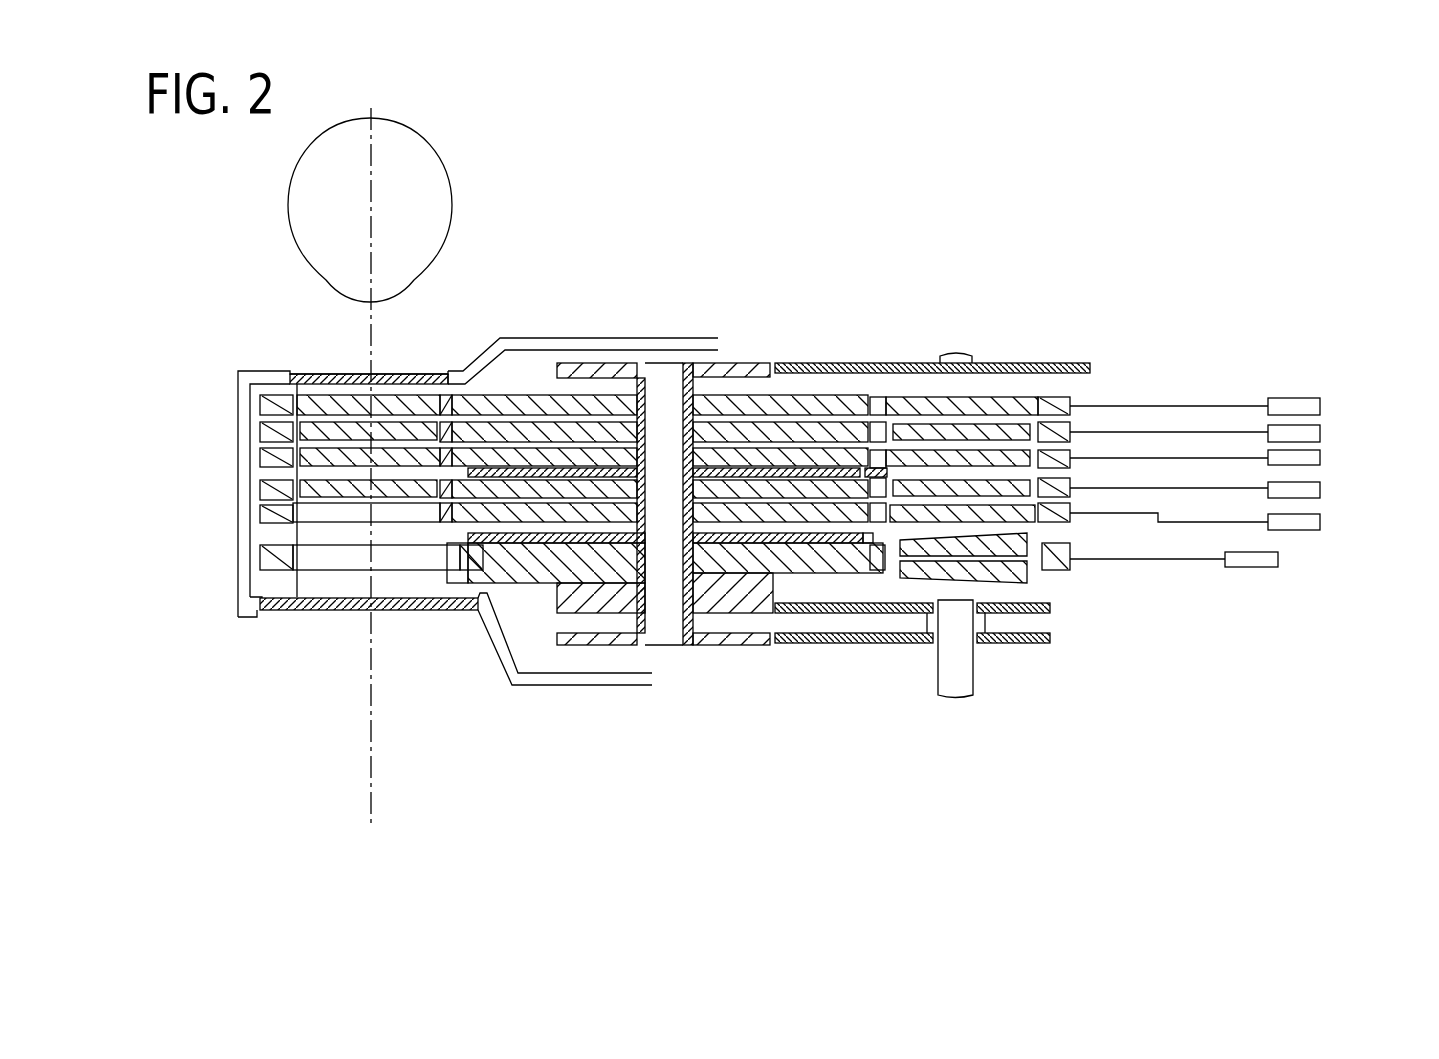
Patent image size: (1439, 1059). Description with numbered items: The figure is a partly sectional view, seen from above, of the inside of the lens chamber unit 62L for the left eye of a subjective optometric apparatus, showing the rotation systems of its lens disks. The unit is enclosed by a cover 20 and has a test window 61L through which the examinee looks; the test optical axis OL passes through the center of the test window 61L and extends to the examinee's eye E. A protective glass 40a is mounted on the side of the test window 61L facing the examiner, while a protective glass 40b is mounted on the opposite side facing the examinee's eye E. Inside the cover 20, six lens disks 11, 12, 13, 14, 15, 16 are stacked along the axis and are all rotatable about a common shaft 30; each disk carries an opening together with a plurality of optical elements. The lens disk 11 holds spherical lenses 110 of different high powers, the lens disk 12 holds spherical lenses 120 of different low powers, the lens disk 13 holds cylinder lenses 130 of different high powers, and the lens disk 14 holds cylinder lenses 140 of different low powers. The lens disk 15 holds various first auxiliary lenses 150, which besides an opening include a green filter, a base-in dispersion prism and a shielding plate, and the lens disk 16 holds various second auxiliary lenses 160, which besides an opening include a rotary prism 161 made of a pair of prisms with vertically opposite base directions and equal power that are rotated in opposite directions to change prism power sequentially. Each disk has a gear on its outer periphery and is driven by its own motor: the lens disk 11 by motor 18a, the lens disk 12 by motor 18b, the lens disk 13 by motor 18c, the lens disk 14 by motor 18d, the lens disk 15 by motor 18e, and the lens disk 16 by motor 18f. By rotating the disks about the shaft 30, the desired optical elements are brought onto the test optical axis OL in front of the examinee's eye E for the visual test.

The lens disk 11 is at (272, 405).
The lens disk 12 is at (272, 431).
The lens disk 13 is at (272, 457).
The lens disk 14 is at (272, 488).
The lens disk 15 is at (273, 513).
The lens disk 16 is at (270, 555).
The motor 18a is at (1320, 410).
The motor 18b is at (1322, 433).
The motor 18c is at (1323, 457).
The motor 18d is at (1323, 489).
The motor 18e is at (1323, 522).
The motor 18f is at (1278, 558).
The cover 20 is at (623, 338).
The shaft 30 is at (668, 385).
The protective glass 40a is at (287, 610).
The protective glass 40b is at (300, 372).
The test window 61L is at (422, 652).
The lens chamber unit 62L is at (757, 724).
The spherical lenses 110 is at (355, 404).
The spherical lenses 120 is at (280, 393).
The cylinder lenses 130 is at (420, 456).
The cylinder lenses 140 is at (462, 470).
The first auxiliary lenses 150 is at (1067, 520).
The second auxiliary lenses 160 is at (979, 674).
The rotary prism 161 is at (997, 583).
The examinee's eye E is at (451, 181).
The test optical axis OL is at (372, 782).